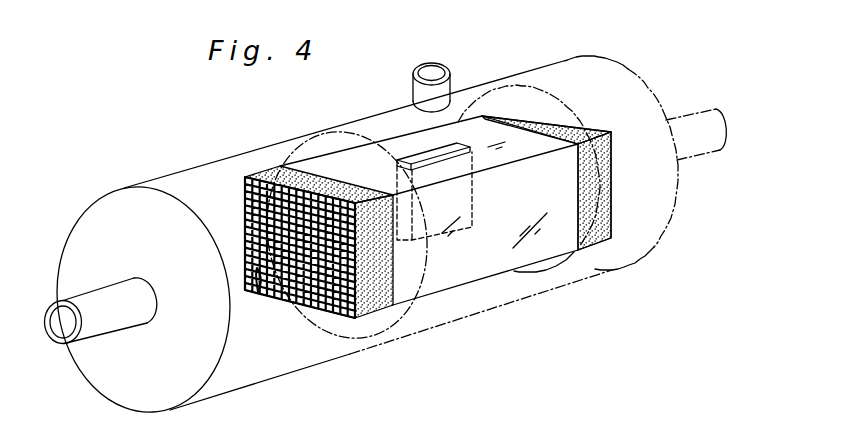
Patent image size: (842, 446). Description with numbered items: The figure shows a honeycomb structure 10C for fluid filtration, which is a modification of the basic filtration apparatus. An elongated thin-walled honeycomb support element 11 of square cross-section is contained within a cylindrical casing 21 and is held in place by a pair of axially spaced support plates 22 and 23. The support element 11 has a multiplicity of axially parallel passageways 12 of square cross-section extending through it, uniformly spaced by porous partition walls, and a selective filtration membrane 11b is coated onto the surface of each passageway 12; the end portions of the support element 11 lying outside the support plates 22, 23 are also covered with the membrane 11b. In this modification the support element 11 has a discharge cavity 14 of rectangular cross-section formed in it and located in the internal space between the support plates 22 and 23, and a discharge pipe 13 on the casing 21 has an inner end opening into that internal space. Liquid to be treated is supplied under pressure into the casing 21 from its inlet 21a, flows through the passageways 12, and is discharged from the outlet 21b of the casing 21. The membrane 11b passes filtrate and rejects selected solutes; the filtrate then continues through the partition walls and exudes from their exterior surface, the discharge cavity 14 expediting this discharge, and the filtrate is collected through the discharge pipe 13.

The honeycomb structure 10C is at (482, 285).
The honeycomb support element 11 is at (282, 293).
The selective filtration membrane 11b is at (276, 178).
The passageways 12 is at (259, 293).
The discharge pipe 13 is at (439, 91).
The discharge cavity 14 is at (427, 155).
The cylindrical casing 21 is at (221, 156).
The inlet 21a is at (100, 324).
The outlet 21b is at (714, 145).
The support plate 22 is at (377, 322).
The support plate 23 is at (585, 258).